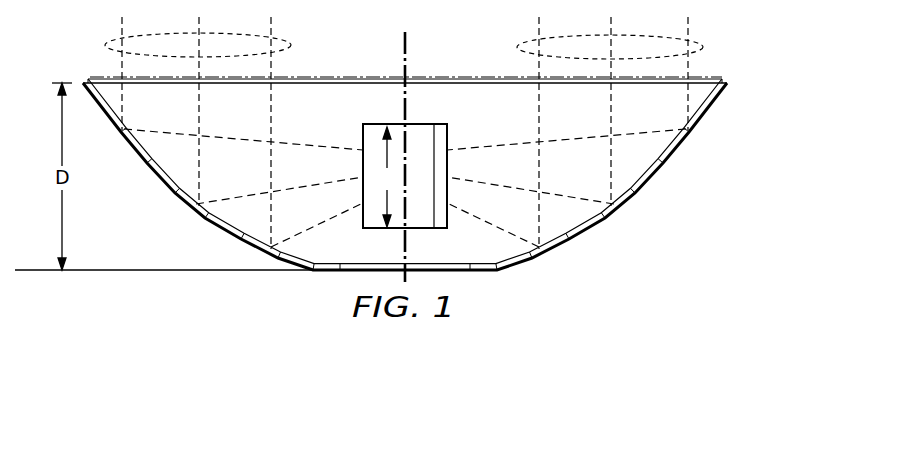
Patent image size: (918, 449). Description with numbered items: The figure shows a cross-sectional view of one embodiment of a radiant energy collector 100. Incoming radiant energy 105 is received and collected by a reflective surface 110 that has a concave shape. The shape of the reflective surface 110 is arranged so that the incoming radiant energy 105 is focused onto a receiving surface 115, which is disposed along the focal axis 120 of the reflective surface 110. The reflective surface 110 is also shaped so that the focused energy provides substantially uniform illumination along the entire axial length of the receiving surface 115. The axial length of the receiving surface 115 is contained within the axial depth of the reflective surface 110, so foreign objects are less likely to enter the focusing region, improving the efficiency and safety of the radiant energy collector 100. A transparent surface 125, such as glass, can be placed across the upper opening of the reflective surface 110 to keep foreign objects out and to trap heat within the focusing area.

The radiant energy collector 100 is at (441, 174).
The radiant energy 105 is at (105, 46).
The reflective surface 110 is at (605, 224).
The receiving surface 115 is at (363, 133).
The focal axis 120 is at (405, 52).
The transparent surface 125 is at (373, 77).